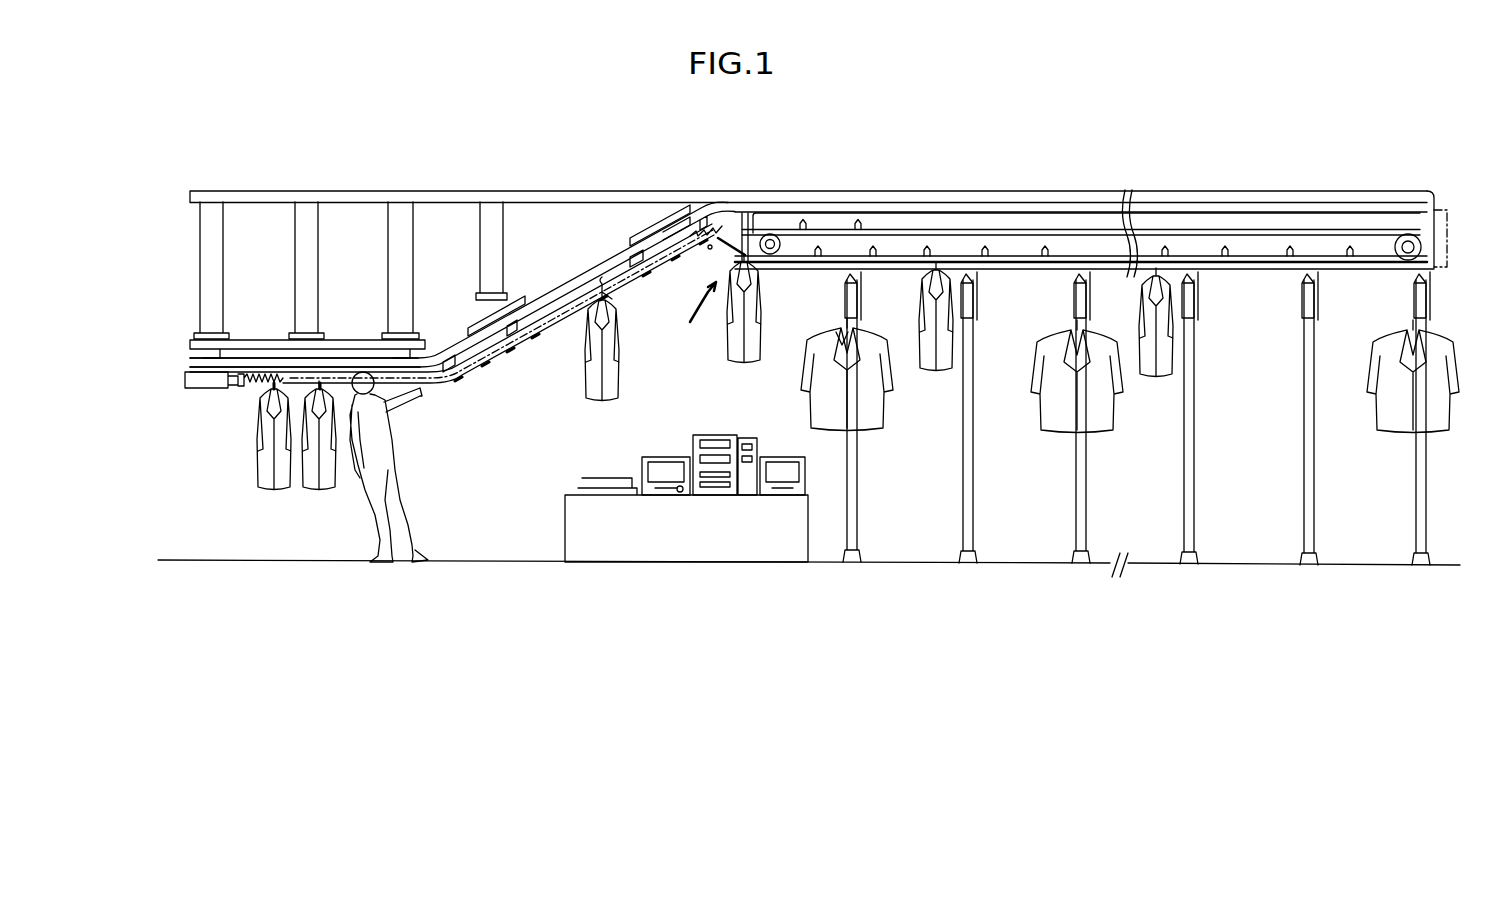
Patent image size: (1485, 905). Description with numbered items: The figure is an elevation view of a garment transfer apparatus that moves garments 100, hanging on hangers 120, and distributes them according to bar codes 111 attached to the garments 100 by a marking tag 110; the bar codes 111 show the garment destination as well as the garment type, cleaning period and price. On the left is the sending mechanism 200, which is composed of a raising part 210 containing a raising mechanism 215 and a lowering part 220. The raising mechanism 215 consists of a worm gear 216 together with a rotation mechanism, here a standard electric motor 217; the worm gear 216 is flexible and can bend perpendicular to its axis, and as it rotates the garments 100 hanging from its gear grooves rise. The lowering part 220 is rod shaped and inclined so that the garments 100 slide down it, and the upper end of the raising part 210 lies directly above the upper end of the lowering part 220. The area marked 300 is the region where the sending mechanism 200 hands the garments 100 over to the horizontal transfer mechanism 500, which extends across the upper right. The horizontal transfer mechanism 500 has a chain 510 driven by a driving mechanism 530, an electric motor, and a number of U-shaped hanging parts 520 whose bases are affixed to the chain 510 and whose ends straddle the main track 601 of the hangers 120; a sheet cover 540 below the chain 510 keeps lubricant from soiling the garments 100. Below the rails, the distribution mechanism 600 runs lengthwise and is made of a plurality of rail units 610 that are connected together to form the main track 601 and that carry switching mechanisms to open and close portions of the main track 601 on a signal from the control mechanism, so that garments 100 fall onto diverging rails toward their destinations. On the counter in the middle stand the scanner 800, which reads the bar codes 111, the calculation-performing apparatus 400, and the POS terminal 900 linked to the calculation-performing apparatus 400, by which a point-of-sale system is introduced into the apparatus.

The garments 100 is at (313, 490).
The marking tag 110 is at (836, 328).
The bar codes 111 is at (835, 347).
The hangers 120 is at (606, 297).
The sending mechanism 200 is at (720, 220).
The raising part 210 is at (675, 252).
The raising mechanism 215 is at (247, 404).
The worm gear 216 is at (498, 368).
The electric motor 217 is at (206, 390).
The lowering part 220 is at (718, 238).
The transfer point 300 is at (693, 320).
The calculation-performing apparatus 400 is at (665, 525).
The horizontal transfer mechanism 500 is at (1028, 228).
The chain 510 is at (883, 230).
The hanging parts 520 is at (923, 270).
The driving mechanism 530 is at (780, 232).
The sheet cover 540 is at (815, 296).
The distribution mechanism 600 is at (1022, 403).
The main track 601 is at (900, 252).
The rail units 610 is at (1032, 271).
The scanner 800 is at (683, 492).
The POS terminal 900 is at (768, 527).